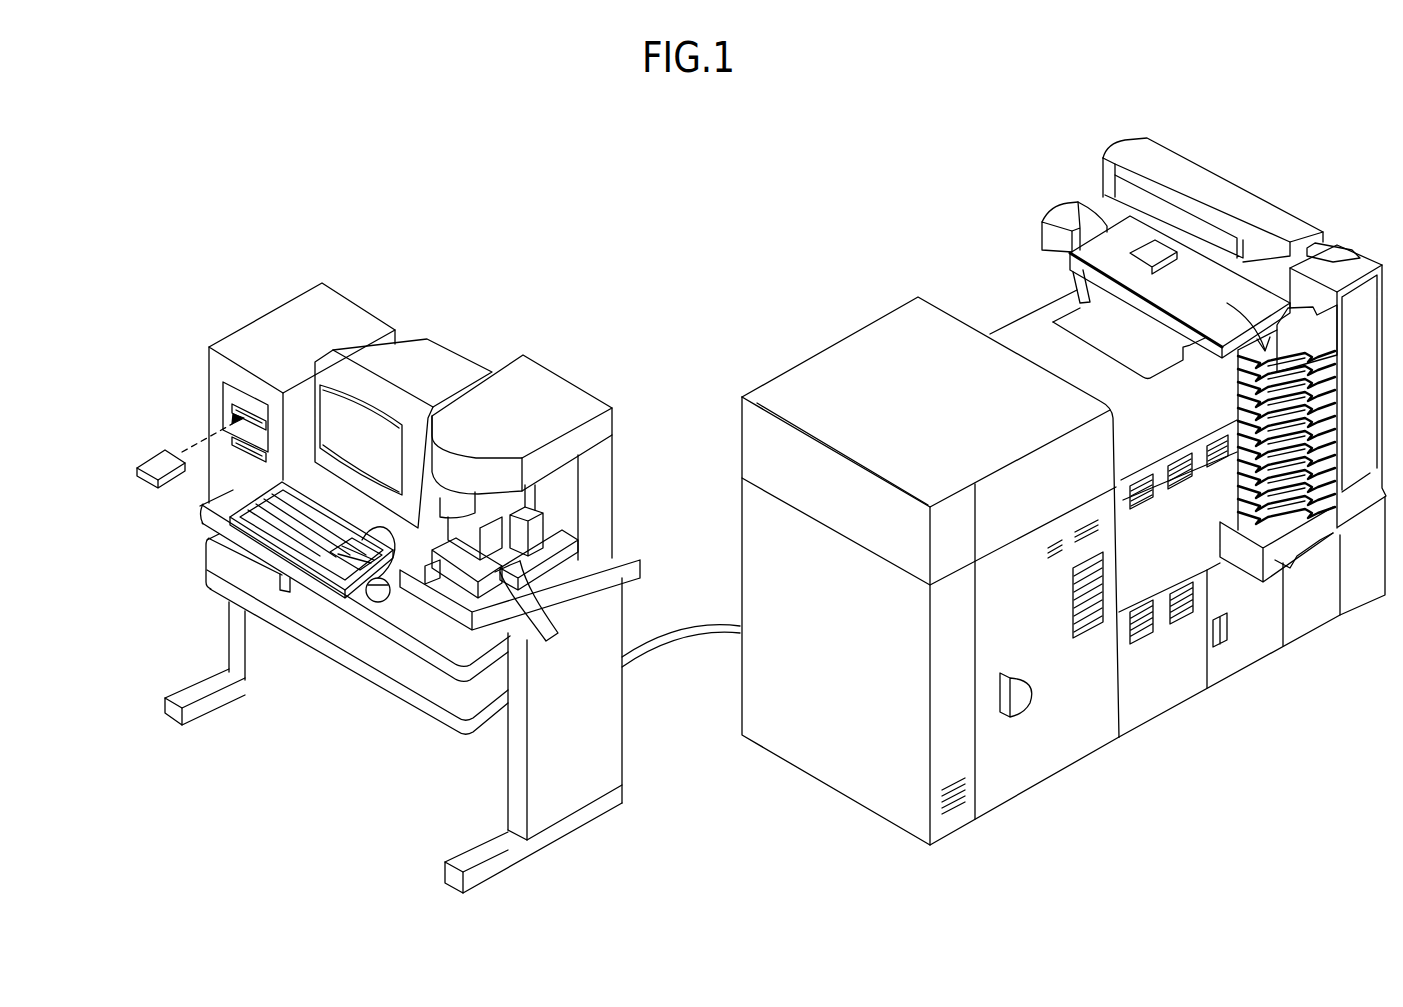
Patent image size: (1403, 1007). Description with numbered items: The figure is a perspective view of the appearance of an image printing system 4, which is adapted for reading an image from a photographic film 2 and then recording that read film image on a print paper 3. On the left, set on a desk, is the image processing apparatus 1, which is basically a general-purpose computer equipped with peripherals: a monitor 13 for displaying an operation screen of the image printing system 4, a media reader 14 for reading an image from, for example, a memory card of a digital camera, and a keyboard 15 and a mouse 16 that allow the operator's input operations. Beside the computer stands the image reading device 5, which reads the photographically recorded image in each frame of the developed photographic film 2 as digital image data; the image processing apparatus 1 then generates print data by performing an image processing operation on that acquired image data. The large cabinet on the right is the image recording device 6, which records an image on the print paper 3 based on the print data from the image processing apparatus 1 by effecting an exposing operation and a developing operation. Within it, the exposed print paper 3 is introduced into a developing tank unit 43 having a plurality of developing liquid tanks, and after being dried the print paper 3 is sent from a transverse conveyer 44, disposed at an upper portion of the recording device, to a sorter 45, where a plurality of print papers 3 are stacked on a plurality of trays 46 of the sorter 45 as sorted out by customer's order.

The image processing apparatus 1 is at (270, 330).
The photographic film 2 is at (550, 636).
The print paper 3 is at (1150, 257).
The image printing system 4 is at (655, 260).
The image reading device 5 is at (547, 390).
The image recording device 6 is at (866, 285).
The monitor 13 is at (432, 348).
The media reader 14 is at (225, 403).
The keyboard 15 is at (265, 527).
The mouse 16 is at (390, 600).
The developing tank unit 43 is at (1178, 668).
The transverse conveyer 44 is at (1110, 250).
The sorter 45 is at (1343, 246).
The trays 46 is at (1245, 417).